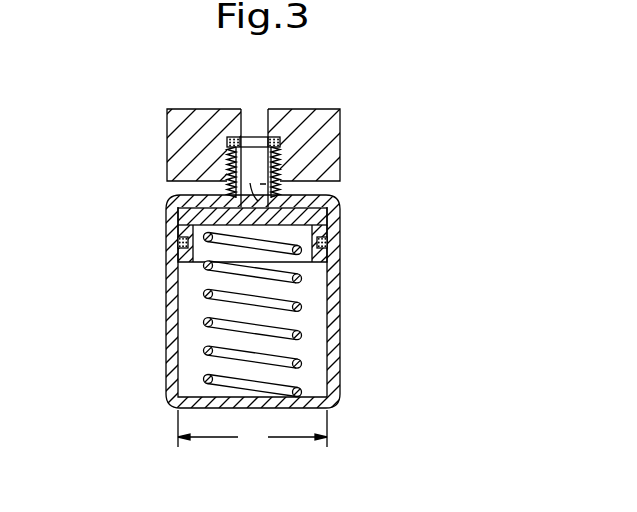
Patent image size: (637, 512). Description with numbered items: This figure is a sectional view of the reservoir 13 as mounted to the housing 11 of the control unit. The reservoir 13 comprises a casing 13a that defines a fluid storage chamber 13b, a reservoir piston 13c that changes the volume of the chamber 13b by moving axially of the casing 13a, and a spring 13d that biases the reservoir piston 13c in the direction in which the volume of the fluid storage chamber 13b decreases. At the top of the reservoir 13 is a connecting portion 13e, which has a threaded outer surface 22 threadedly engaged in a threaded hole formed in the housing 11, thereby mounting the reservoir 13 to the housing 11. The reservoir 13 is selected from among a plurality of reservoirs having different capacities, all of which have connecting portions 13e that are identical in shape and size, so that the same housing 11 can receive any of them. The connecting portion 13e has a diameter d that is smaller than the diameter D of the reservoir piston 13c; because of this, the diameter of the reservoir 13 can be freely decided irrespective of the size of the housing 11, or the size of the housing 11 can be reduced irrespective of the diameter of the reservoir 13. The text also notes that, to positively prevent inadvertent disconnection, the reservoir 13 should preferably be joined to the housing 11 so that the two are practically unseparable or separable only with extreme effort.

The housing 11 is at (328, 126).
The threaded outer surface 22 is at (227, 143).
The connecting portion 13e is at (227, 163).
The diameter of the connecting portion d is at (272, 192).
The reservoir 13 is at (272, 301).
The casing 13a is at (335, 322).
The fluid storage chamber 13b is at (183, 212).
The reservoir piston 13c is at (328, 224).
The spring 13d is at (300, 365).
The diameter of the reservoir piston D is at (252, 430).